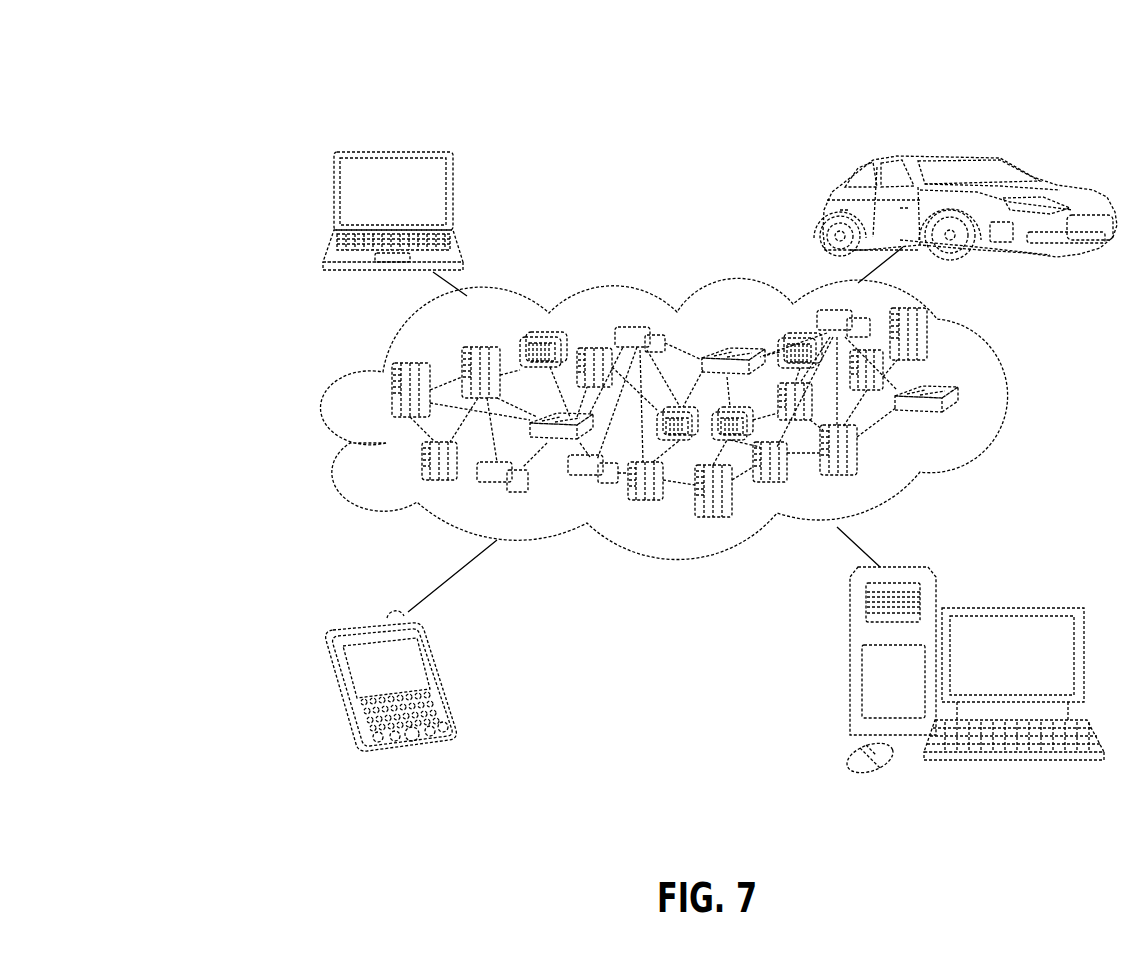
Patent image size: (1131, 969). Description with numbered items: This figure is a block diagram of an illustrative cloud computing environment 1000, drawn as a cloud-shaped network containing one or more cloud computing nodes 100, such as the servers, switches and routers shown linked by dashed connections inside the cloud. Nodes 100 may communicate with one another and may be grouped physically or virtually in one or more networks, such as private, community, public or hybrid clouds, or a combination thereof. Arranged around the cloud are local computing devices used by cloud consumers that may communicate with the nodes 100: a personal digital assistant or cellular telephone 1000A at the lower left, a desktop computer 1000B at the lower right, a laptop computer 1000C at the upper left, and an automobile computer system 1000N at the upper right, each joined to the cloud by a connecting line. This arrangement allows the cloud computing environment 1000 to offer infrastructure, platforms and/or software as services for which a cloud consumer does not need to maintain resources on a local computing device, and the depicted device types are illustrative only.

The cloud computing environment 1000 is at (268, 66).
The cloud computing nodes 100 is at (968, 423).
The personal digital assistant (PDA) or cellular telephone 1000A is at (448, 676).
The desktop computer 1000B is at (1010, 606).
The laptop computer 1000C is at (453, 197).
The automobile computer system 1000N is at (822, 212).